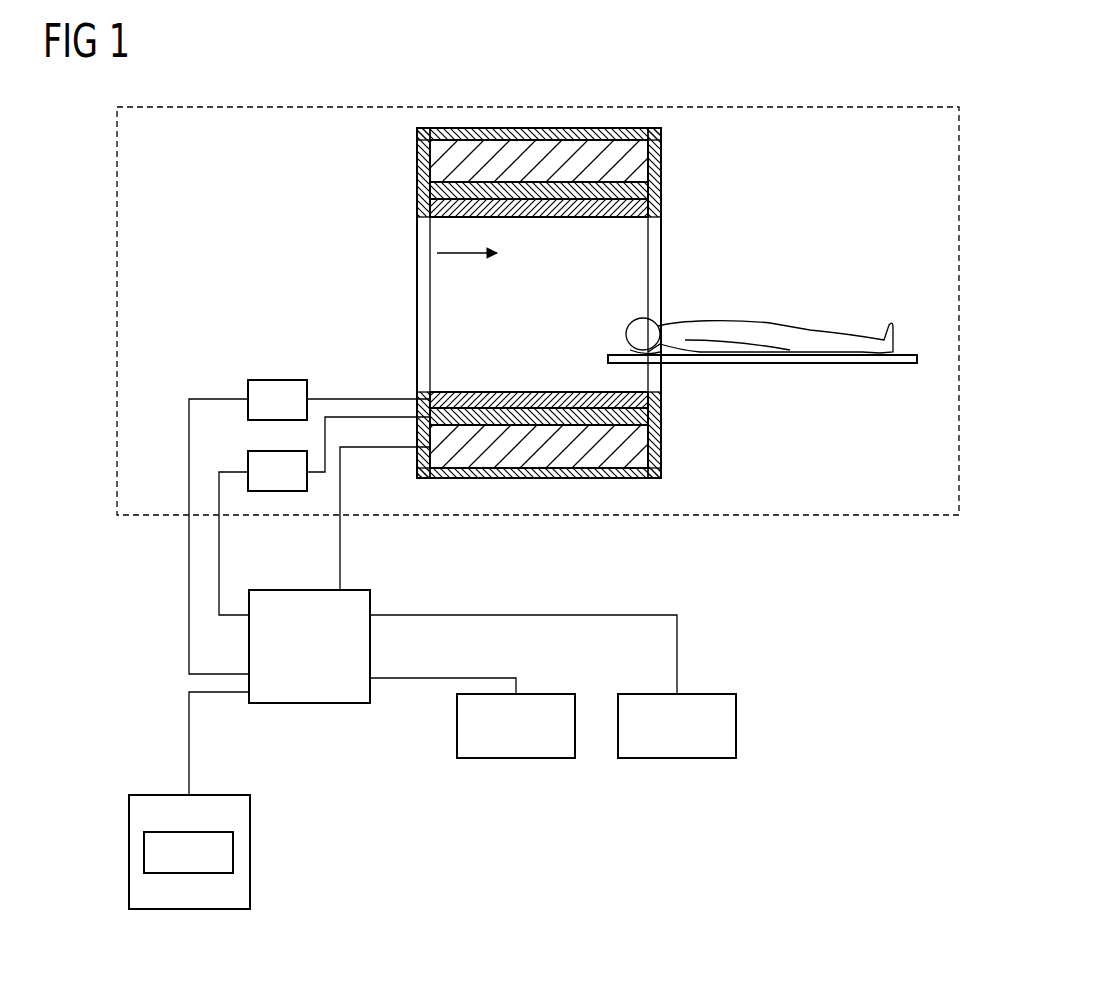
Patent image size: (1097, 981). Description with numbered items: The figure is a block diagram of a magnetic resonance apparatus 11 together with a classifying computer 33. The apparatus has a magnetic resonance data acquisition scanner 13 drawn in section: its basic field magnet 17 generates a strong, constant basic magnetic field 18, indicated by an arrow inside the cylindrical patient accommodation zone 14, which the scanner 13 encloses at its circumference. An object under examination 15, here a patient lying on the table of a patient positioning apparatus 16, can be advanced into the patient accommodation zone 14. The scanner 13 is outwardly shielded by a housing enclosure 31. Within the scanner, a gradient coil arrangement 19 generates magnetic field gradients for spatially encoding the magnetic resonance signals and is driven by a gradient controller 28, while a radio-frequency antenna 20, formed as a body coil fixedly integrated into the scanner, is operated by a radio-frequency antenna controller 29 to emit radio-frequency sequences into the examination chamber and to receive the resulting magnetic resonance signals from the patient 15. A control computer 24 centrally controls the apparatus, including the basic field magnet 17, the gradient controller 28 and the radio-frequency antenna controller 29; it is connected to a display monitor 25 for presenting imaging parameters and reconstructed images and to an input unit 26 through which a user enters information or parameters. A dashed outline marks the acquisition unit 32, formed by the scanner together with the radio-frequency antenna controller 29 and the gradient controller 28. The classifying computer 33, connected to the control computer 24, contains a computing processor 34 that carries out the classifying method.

The magnetic resonance apparatus 11 is at (816, 98).
The magnetic resonance data acquisition scanner 13 is at (404, 152).
The patient accommodation zone 14 is at (628, 253).
The object under examination 15 is at (848, 338).
The patient positioning apparatus 16 is at (884, 363).
The basic field magnet 17 is at (643, 165).
The basic magnetic field 18 is at (462, 256).
The gradient coil arrangement 19 is at (437, 190).
The radio-frequency antenna 20 is at (440, 210).
The control computer 24 is at (311, 703).
The display monitor 25 is at (457, 724).
The input unit 26 is at (736, 724).
The gradient controller 28 is at (281, 491).
The radio-frequency antenna controller 29 is at (283, 380).
The housing enclosure 31 is at (598, 133).
The acquisition unit 32 is at (117, 282).
The classifying computer 33 is at (250, 897).
The computing processor 34 is at (233, 853).